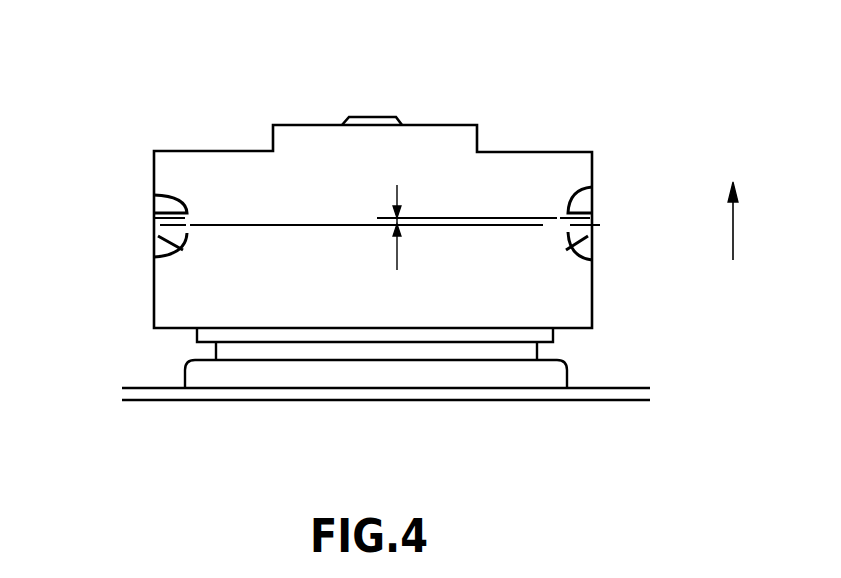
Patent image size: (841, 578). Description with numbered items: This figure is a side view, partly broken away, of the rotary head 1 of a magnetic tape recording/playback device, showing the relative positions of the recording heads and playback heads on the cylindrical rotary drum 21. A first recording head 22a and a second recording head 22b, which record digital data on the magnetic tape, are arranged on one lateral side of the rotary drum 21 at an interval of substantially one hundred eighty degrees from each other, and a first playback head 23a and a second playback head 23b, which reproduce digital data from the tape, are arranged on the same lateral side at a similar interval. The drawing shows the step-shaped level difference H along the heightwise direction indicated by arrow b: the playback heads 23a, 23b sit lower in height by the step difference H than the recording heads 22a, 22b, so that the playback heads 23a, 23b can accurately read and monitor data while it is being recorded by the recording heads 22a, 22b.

The rotary head 1 is at (452, 122).
The rotary drum 21 is at (522, 165).
The first recording head 22a is at (596, 224).
The second recording head 22b is at (620, 225).
The first playback head 23a is at (153, 227).
The second playback head 23b is at (113, 230).